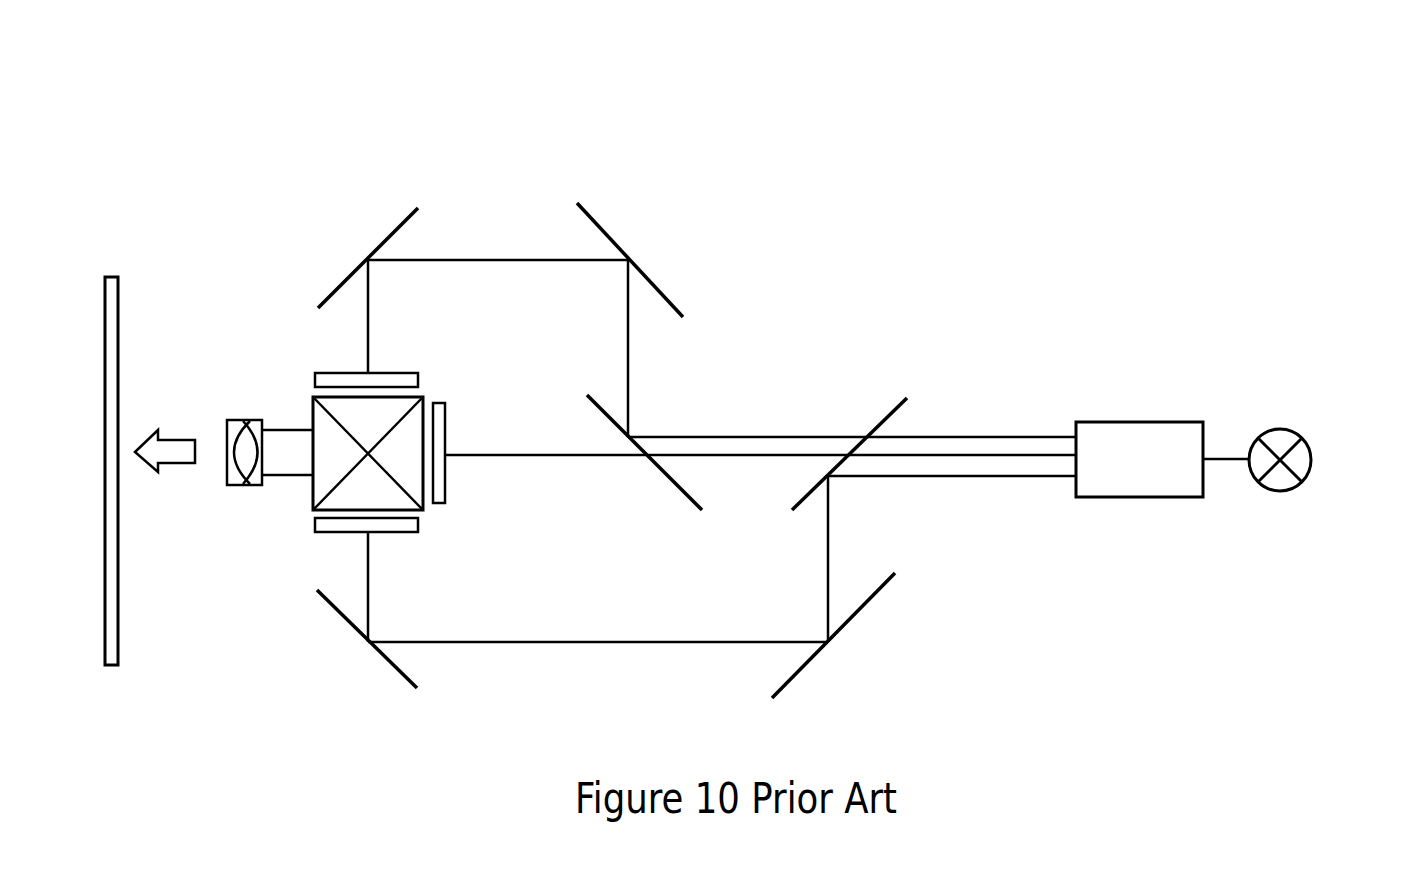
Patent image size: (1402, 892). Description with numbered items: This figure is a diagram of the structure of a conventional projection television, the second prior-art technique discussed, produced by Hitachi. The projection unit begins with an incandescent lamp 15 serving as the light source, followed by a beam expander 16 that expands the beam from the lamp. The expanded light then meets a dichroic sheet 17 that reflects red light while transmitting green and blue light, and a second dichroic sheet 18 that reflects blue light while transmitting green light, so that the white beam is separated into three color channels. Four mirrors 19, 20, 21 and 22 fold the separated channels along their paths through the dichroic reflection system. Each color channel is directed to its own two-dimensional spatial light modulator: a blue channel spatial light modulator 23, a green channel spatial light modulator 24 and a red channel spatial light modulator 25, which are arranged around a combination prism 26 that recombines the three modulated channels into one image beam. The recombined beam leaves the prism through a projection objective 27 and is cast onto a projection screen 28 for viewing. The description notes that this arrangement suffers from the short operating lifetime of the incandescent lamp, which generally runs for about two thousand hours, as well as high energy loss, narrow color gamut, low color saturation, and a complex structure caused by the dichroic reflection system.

The incandescent lamp 15 is at (1278, 440).
The beam expander 16 is at (1137, 445).
The dichroic sheet for reflecting red light and transmitting green and blue light 17 is at (888, 417).
The dichroic sheet for reflecting blue light and transmitting green light 18 is at (603, 410).
The mirror 19 is at (662, 288).
The mirror 20 is at (863, 610).
The mirror 21 is at (388, 668).
The mirror 22 is at (398, 227).
The blue channel 2-D spatial light modulator 23 is at (388, 380).
The green channel 2-D spatial light modulator 24 is at (442, 443).
The red channel 2-D spatial light modulator 25 is at (405, 525).
The combination prism 26 is at (330, 430).
The projection objective 27 is at (237, 442).
The projection screen 28 is at (112, 287).